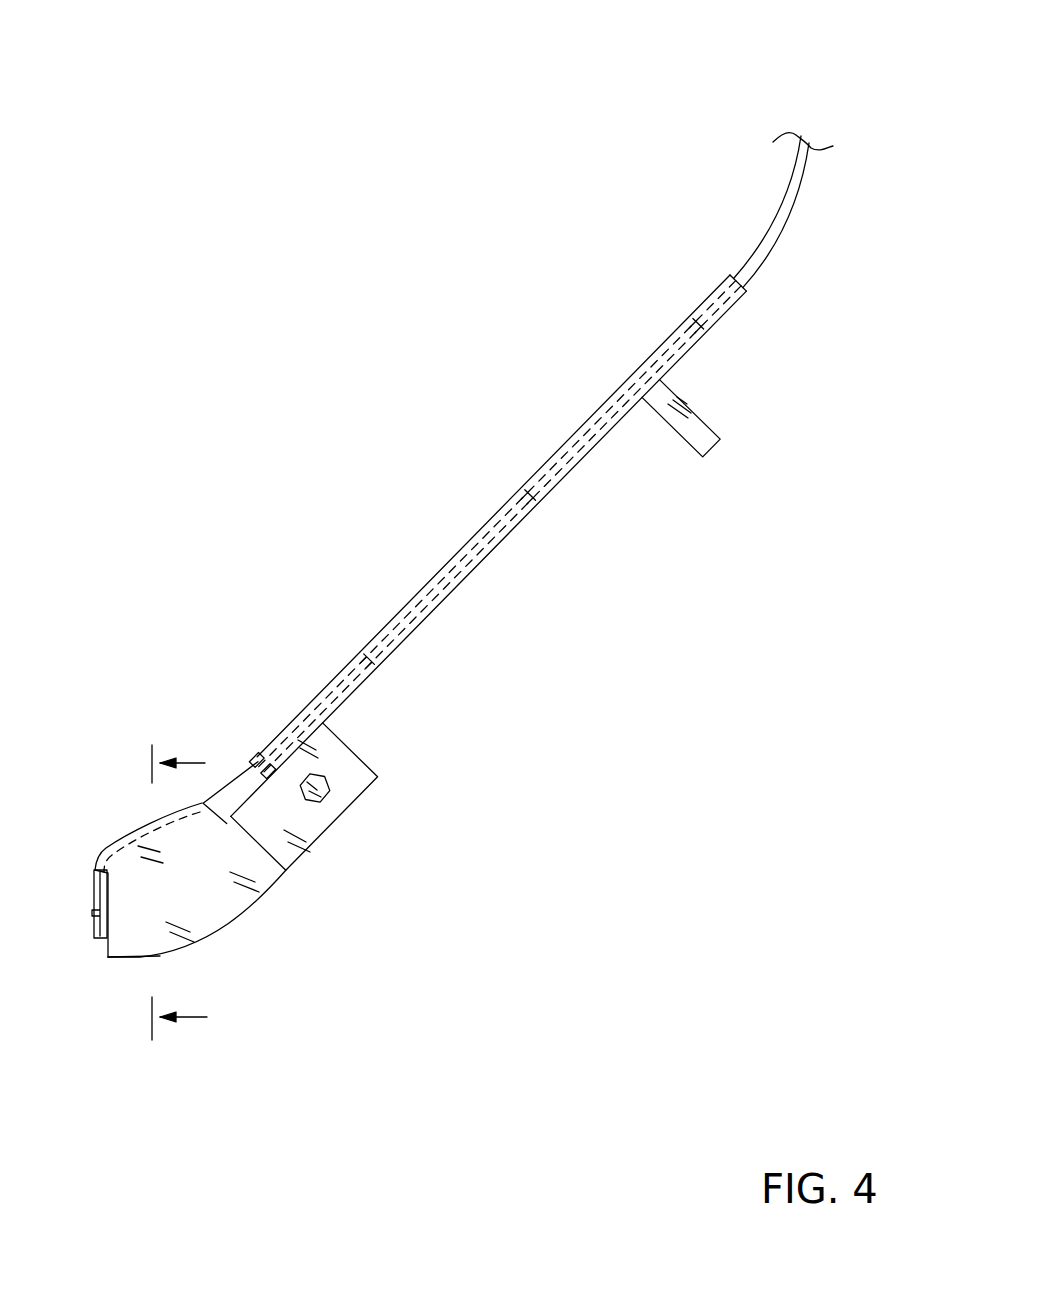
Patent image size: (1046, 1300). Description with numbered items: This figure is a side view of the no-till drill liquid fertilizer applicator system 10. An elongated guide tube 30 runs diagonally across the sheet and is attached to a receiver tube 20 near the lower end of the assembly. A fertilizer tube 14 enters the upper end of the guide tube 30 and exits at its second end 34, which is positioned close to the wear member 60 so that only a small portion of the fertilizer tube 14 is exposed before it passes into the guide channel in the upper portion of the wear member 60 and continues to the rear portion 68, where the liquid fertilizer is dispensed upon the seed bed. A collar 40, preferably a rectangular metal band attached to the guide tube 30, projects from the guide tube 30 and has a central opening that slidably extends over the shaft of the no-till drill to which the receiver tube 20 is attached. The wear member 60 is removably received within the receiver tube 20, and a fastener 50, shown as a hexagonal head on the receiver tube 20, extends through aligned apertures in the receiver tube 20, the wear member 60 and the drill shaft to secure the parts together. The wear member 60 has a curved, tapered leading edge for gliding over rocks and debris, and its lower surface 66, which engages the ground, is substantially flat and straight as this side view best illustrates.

The no-till drill liquid fertilizer applicator system 10 is at (227, 186).
The fertilizer tube 14 is at (778, 232).
The receiver tube 20 is at (340, 760).
The guide tube 30 is at (557, 455).
The second end 34 is at (254, 755).
The collar 40 is at (710, 442).
The fastener 50 is at (328, 797).
The wear member 60 is at (232, 903).
The lower surface 66 is at (138, 958).
The rear portion 68 is at (105, 950).